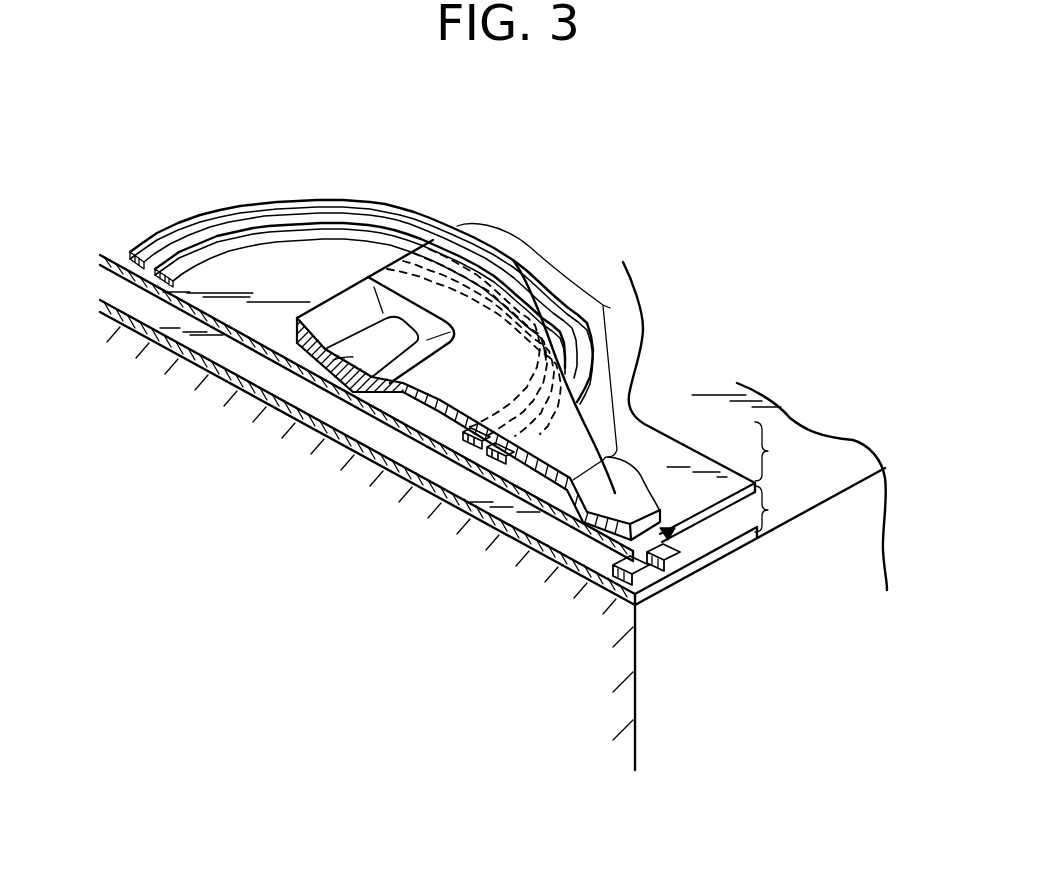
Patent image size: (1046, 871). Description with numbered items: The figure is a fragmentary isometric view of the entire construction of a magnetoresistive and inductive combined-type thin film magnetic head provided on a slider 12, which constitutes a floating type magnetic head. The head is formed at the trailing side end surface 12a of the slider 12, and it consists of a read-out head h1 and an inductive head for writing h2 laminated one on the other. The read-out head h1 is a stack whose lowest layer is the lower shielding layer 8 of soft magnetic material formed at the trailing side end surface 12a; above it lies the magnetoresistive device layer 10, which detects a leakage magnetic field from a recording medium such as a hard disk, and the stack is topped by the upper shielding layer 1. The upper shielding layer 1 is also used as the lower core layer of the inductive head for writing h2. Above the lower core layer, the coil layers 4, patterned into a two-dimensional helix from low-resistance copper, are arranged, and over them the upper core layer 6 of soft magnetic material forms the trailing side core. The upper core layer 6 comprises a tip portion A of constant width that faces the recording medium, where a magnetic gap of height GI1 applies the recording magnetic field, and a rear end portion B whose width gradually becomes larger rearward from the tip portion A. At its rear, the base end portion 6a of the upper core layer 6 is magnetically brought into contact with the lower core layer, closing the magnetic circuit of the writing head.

The upper shielding layer 1 is at (643, 433).
The coil layers 4 is at (224, 220).
The upper core layer 6 is at (443, 400).
The base end portion 6a is at (322, 388).
The lower shielding layer 8 is at (737, 541).
The magnetoresistive device layer 10 is at (643, 567).
The slider 12 is at (582, 643).
The trailing side end surface 12a is at (851, 457).
The magnetic gap height GI1 is at (675, 540).
The tip portion A is at (635, 480).
The rear end portion B is at (544, 352).
The read-out head h1 is at (779, 508).
The inductive head for writing h2 is at (780, 451).